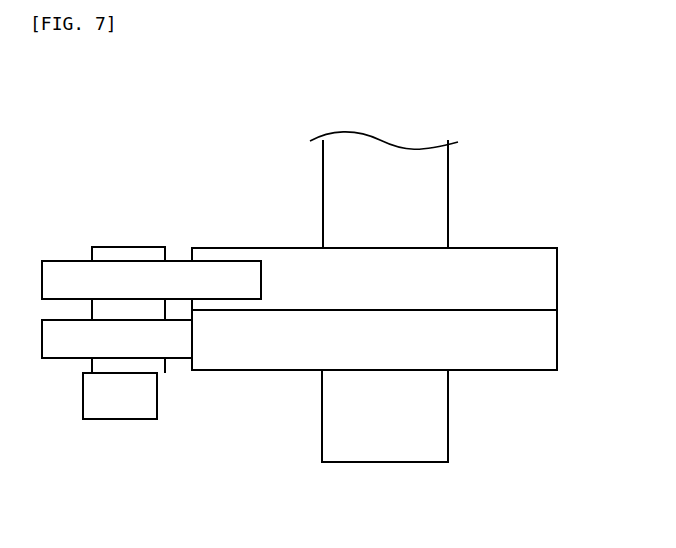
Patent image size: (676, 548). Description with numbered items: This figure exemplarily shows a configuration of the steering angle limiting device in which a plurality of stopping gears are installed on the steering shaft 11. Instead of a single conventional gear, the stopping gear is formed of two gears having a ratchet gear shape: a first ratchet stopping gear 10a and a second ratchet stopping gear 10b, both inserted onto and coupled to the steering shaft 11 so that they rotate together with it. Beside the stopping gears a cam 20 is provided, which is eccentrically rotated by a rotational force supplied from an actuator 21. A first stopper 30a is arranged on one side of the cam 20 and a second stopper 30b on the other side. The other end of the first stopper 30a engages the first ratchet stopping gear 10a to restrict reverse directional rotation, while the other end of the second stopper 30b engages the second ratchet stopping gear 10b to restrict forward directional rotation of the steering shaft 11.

The steering shaft 11 is at (390, 165).
The first ratchet stopping gear 10a is at (510, 265).
The second ratchet stopping gear 10b is at (500, 360).
The cam 20 is at (117, 253).
The actuator 21 is at (118, 405).
The first stopper 30a is at (178, 273).
The second stopper 30b is at (178, 360).